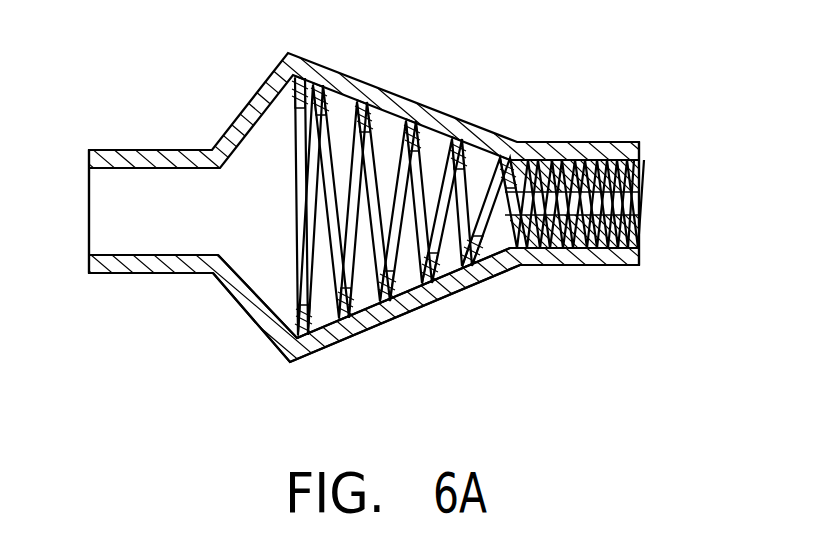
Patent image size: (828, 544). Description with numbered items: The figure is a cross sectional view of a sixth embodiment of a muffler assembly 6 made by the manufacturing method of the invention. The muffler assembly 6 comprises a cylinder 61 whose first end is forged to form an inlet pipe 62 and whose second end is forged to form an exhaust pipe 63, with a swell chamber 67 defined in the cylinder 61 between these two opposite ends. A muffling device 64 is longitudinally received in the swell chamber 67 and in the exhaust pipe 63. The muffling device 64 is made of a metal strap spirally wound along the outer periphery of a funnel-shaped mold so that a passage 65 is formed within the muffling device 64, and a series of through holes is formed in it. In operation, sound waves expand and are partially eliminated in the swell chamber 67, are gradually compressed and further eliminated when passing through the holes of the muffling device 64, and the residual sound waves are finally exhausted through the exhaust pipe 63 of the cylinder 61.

The muffler assembly 6 is at (517, 137).
The cylinder 61 is at (258, 308).
The inlet pipe 62 is at (88, 212).
The exhaust pipe 63 is at (642, 177).
The muffling device 64 is at (266, 82).
The passage 65 is at (381, 140).
The swell chamber 67 is at (277, 167).